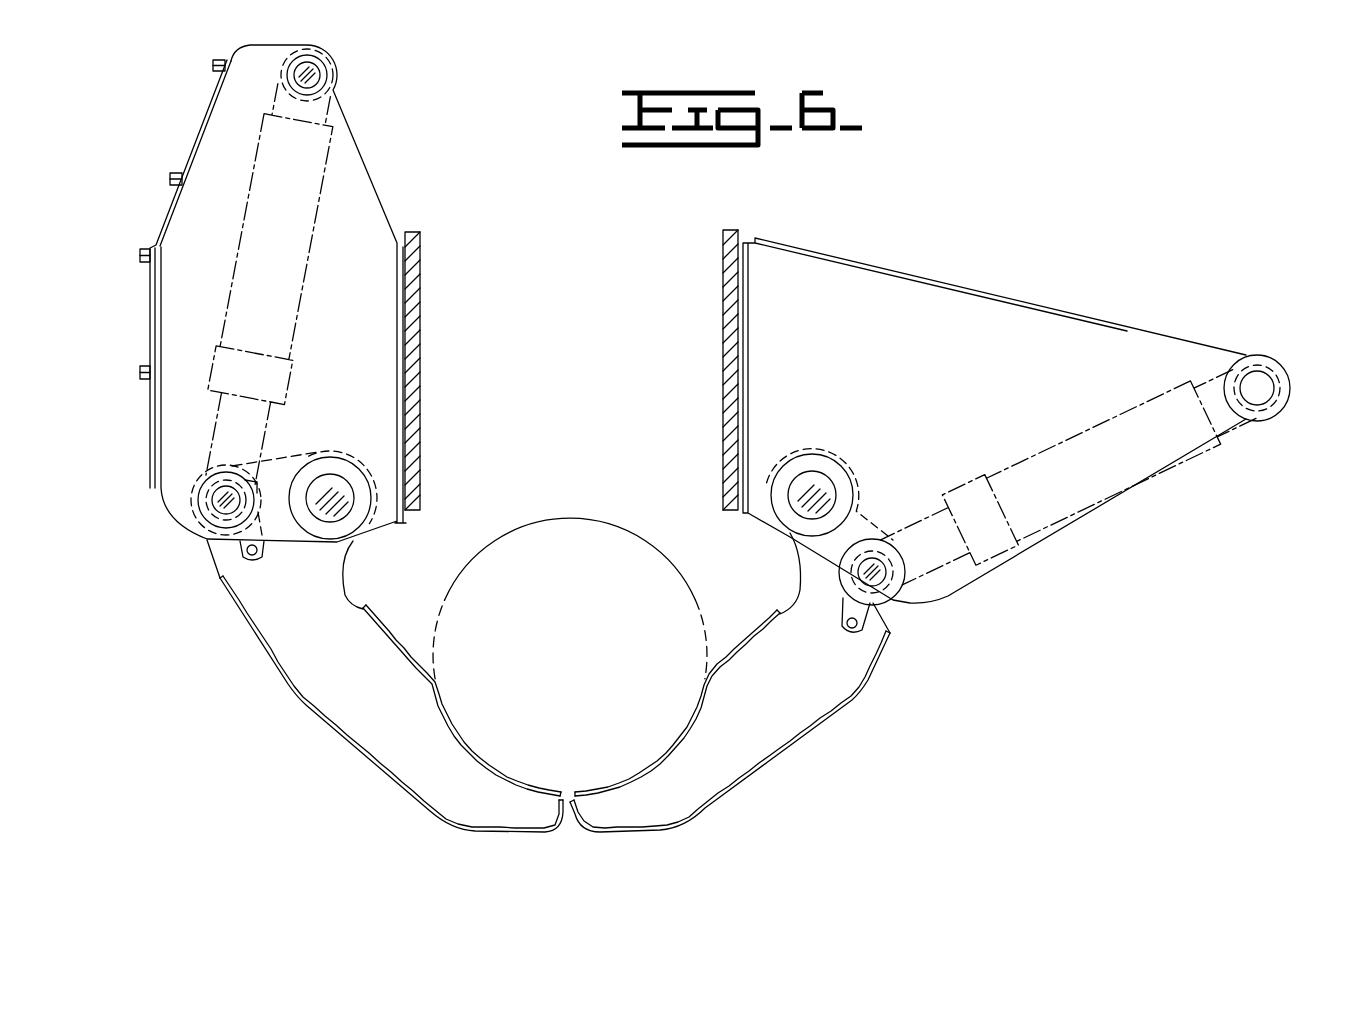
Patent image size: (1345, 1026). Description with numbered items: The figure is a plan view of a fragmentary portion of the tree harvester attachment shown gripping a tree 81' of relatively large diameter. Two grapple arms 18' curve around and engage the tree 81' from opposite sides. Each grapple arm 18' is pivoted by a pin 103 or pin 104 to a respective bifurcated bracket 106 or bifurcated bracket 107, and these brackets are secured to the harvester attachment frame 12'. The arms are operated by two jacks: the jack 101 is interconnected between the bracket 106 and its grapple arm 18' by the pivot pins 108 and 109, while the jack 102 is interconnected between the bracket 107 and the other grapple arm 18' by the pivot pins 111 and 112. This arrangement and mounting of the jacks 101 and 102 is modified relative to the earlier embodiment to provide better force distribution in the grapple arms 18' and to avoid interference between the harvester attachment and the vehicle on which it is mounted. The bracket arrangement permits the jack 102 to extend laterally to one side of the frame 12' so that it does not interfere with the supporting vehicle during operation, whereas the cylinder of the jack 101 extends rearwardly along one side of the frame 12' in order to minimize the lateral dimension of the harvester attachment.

The frame 12' is at (571, 350).
The grapple arms 18' is at (548, 716).
The tree 81' is at (570, 598).
The jack 101 is at (328, 228).
The jack 102 is at (1062, 432).
The pin 103 is at (343, 497).
The pin 104 is at (797, 492).
The bifurcated bracket 106 is at (368, 335).
The bifurcated bracket 107 is at (840, 335).
The pivot pin 108 is at (322, 70).
The pivot pin 109 is at (214, 508).
The pivot pin 111 is at (1255, 382).
The pivot pin 112 is at (875, 578).